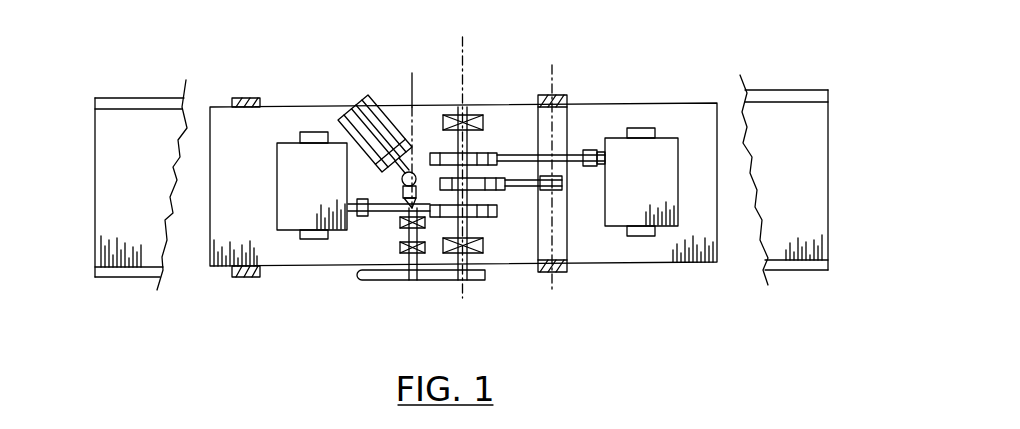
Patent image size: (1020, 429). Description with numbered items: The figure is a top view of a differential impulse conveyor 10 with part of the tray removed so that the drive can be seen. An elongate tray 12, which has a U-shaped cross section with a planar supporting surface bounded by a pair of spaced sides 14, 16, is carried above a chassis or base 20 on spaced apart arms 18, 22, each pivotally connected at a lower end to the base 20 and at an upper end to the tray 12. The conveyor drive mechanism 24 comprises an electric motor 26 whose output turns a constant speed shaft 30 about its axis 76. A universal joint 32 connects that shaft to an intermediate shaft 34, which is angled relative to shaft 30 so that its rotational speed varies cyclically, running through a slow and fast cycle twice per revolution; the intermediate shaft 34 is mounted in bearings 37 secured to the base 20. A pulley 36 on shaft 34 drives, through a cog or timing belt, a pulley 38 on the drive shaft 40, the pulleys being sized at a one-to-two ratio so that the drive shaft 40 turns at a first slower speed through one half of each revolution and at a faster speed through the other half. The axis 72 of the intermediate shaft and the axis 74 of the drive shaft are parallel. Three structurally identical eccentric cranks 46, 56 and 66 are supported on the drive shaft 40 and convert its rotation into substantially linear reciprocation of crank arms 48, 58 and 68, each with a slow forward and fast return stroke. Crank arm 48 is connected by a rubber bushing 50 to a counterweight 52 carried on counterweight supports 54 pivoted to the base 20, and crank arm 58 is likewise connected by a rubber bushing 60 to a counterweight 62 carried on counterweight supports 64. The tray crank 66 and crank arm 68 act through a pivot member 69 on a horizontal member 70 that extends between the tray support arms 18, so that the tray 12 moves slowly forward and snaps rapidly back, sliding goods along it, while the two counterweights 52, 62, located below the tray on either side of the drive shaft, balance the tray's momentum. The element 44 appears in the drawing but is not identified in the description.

The differential impulse conveyor 10 is at (318, 330).
The elongate tray 12 is at (122, 173).
The tray side 14 is at (127, 103).
The tray side 16 is at (148, 275).
The tray support arm 18 is at (566, 95).
The base 20 is at (272, 258).
The tray support arm 22 is at (240, 97).
The conveyor drive mechanism 24 is at (419, 138).
The electric motor 26 is at (384, 99).
The constant speed shaft 30 is at (402, 176).
The universal joint 32 is at (403, 190).
The intermediate shaft 34 is at (383, 277).
The pulley 36 is at (372, 281).
The bearings 37 is at (403, 223).
The pulley 38 is at (455, 281).
The drive shaft 40 is at (461, 107).
The second shaft 44 is at (458, 107).
The eccentric crank 46 is at (494, 151).
The crank arm 48 is at (536, 222).
The rubber bushing 50 is at (590, 166).
The counterweight 52 is at (659, 171).
The counterweight supports 54 is at (643, 236).
The eccentric crank 56 is at (497, 222).
The crank arm 58 is at (347, 264).
The rubber bushing 60 is at (367, 216).
The counterweight 62 is at (306, 215).
The counterweight supports 64 is at (298, 238).
The tray crank 66 is at (507, 187).
The crank arm 68 is at (540, 228).
The pivot member 69 is at (547, 191).
The horizontal member 70 is at (560, 133).
The axis of intermediate shaft 72 is at (412, 73).
The axis of drive shaft 74 is at (467, 45).
The axis of constant speed shaft 76 is at (351, 104).